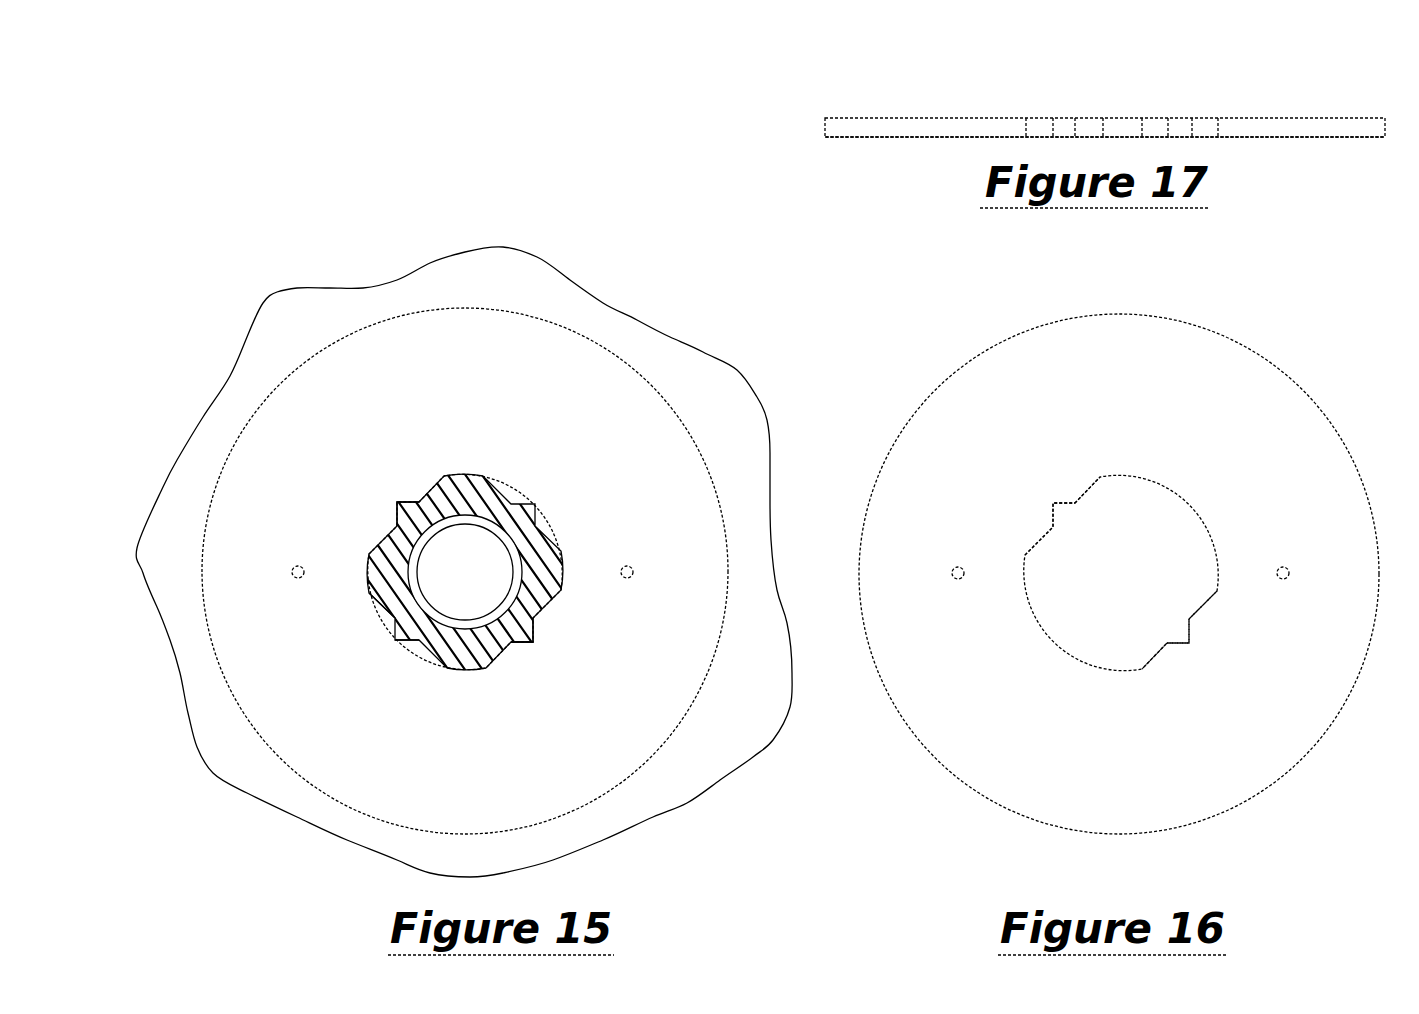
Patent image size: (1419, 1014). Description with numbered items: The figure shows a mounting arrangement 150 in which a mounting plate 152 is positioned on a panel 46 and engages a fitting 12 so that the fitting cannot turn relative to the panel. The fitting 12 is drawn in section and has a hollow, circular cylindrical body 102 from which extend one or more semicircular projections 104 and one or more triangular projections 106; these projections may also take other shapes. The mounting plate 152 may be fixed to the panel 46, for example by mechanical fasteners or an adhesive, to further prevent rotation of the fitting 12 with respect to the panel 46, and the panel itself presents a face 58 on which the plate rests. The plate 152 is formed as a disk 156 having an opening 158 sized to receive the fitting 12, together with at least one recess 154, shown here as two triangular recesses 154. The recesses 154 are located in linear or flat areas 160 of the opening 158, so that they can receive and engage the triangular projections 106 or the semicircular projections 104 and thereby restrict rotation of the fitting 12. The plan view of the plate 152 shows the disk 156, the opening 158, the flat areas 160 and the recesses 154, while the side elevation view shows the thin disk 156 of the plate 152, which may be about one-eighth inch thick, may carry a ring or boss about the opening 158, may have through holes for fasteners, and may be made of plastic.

In FIG. 15, the fitting 12 is at (427, 485).
In FIG. 15, the panel 46 is at (608, 285).
In FIG. 15, the knob body 58 is at (300, 349).
In FIG. 15, the circular cylindrical body 102 is at (398, 607).
In FIG. 15, the semicircular projections 104 is at (563, 575).
In FIG. 15, the triangular projections 106 is at (527, 640).
In FIG. 15, the mounting arrangement 150 is at (268, 279).
In FIG. 15, the mounting plate 152 is at (636, 413).
In FIG. 16, the mounting plate 152 is at (1332, 384).
In FIG. 17, the mounting plate 152 is at (849, 104).
In FIG. 15, the recess 154 is at (398, 512).
In FIG. 16, the recess 154 is at (1052, 515).
In FIG. 16, the disk 156 is at (1042, 446).
In FIG. 17, the disk 156 is at (900, 138).
In FIG. 16, the opening 158 is at (1190, 503).
In FIG. 16, the flat areas 160 is at (1040, 538).